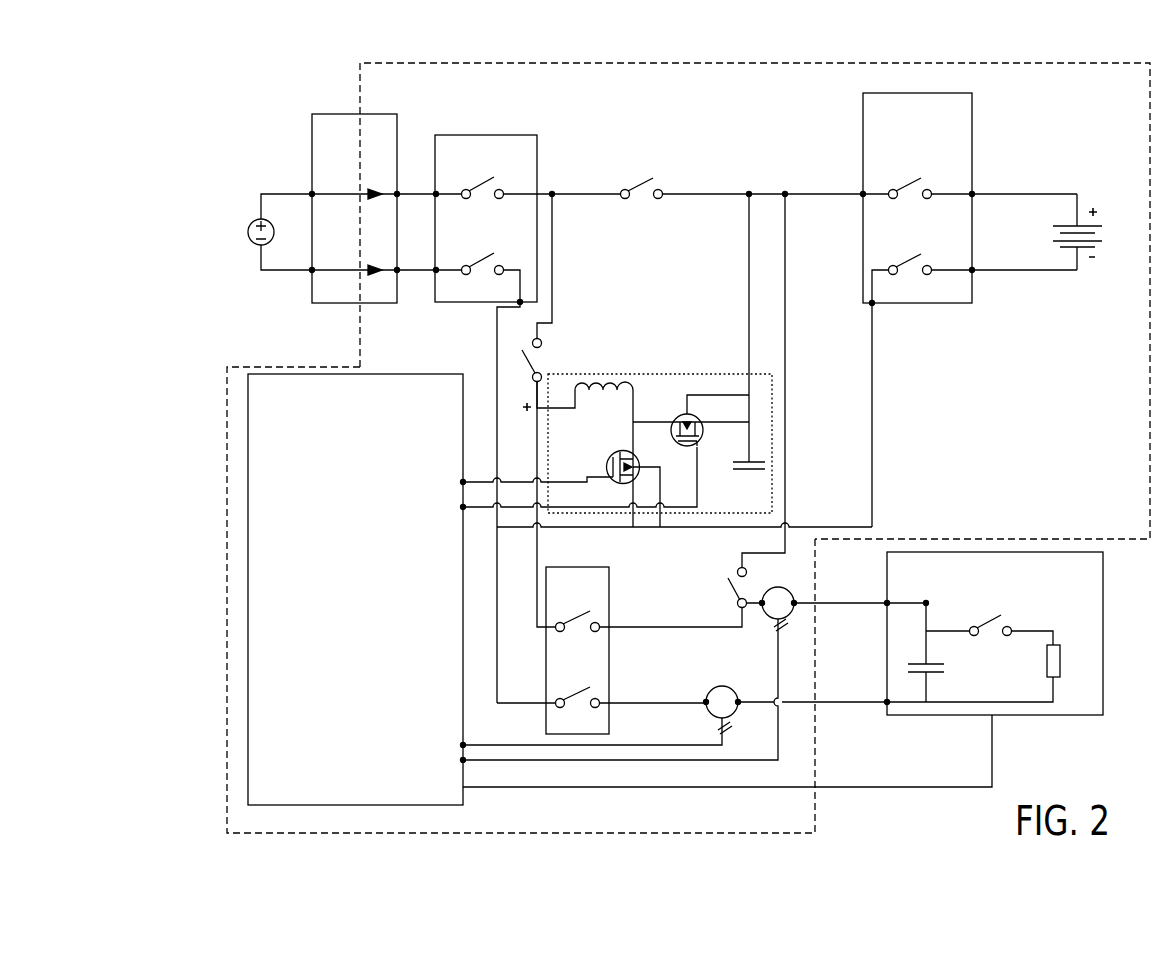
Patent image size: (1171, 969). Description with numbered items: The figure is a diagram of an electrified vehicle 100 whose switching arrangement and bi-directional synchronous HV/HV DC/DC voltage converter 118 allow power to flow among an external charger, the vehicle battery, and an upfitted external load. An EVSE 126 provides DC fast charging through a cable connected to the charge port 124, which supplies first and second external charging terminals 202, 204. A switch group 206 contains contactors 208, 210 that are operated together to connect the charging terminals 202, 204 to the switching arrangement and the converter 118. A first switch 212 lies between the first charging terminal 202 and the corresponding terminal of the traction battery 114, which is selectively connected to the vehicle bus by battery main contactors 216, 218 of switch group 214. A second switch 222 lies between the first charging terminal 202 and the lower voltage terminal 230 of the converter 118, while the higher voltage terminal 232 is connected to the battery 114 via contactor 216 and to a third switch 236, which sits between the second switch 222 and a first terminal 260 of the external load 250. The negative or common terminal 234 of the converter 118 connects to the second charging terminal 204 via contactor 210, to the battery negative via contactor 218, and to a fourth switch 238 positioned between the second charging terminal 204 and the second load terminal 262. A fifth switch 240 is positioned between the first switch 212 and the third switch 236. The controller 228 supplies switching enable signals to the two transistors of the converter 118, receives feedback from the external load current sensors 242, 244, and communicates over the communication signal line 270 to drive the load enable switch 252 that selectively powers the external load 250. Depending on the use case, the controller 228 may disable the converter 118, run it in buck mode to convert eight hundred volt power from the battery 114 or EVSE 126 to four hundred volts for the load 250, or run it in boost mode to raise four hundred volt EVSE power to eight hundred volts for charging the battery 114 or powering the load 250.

The electrified vehicle 100 is at (722, 62).
The traction battery 114 is at (1099, 193).
The bi-directional synchronous switching DC/DC voltage converter 118 is at (643, 373).
The charge port 124 is at (330, 113).
The EVSE 126 is at (205, 199).
The first external charging terminal 202 is at (343, 188).
The second external charging terminal 204 is at (347, 274).
The switch group SG2 206 is at (485, 134).
The switch or contactor 208 is at (506, 173).
The switch or contactor 210 is at (472, 282).
The first switch S3 212 is at (643, 171).
The switch group SG1 214 is at (972, 148).
The battery main contactor 216 is at (902, 206).
The battery main contactor 218 is at (920, 288).
The second switch S4 222 is at (575, 327).
The controller 228 is at (248, 564).
The lower voltage terminal 230 is at (518, 401).
The higher voltage terminal 232 is at (741, 305).
The negative or common terminal 234 is at (530, 543).
The third switch S5 236 is at (618, 602).
The fourth switch S6 238 is at (614, 693).
The fifth switch S7 240 is at (724, 585).
The external load current sensor 242 is at (781, 622).
The external load current sensor 244 is at (722, 726).
The external load 250 is at (1104, 650).
The load enable switch 252 is at (1023, 617).
The first terminal of external load 260 is at (821, 598).
The second external load terminal 262 is at (828, 715).
The communication signal line 270 is at (893, 788).